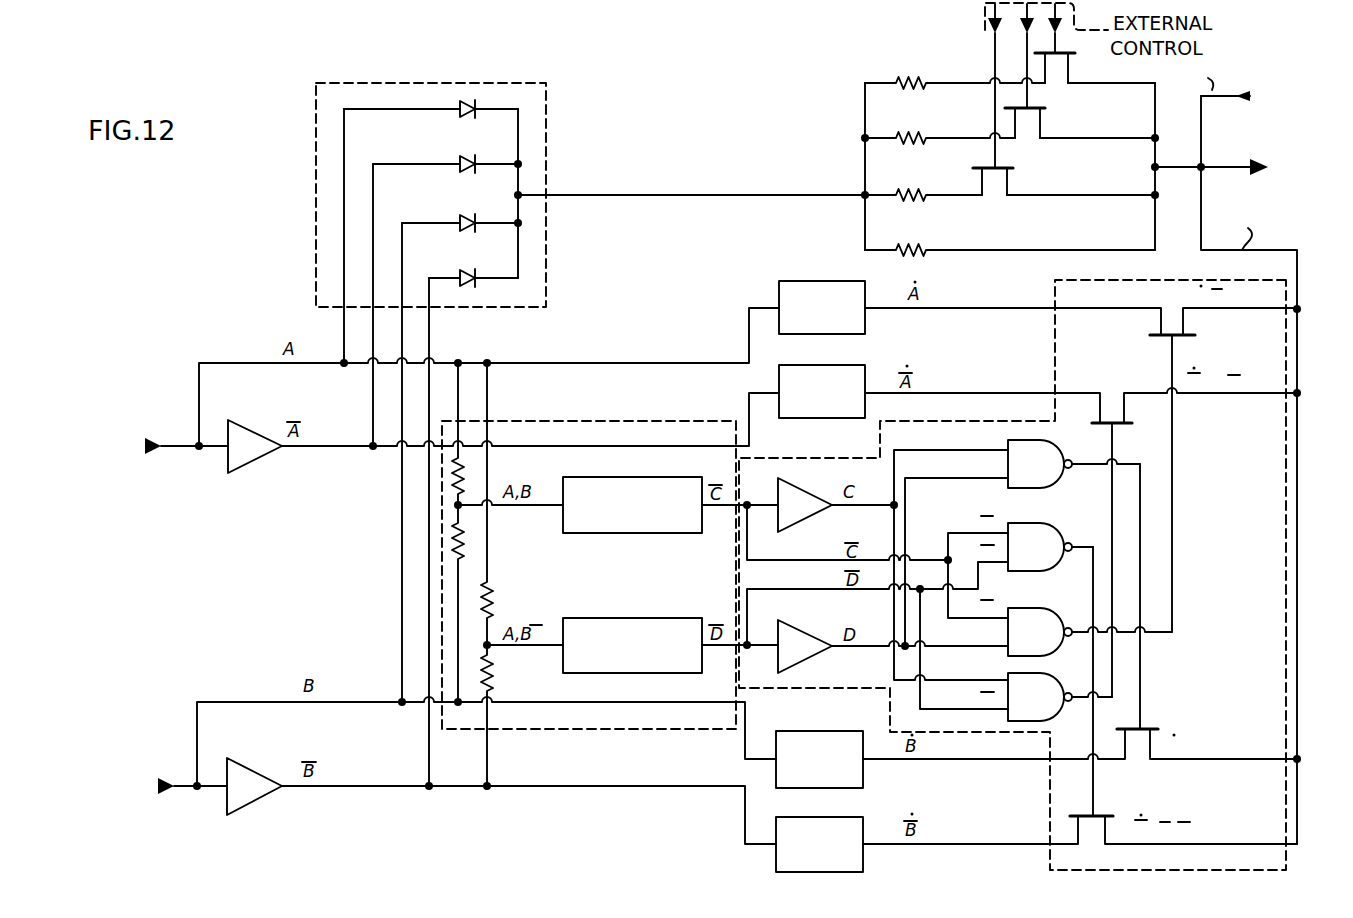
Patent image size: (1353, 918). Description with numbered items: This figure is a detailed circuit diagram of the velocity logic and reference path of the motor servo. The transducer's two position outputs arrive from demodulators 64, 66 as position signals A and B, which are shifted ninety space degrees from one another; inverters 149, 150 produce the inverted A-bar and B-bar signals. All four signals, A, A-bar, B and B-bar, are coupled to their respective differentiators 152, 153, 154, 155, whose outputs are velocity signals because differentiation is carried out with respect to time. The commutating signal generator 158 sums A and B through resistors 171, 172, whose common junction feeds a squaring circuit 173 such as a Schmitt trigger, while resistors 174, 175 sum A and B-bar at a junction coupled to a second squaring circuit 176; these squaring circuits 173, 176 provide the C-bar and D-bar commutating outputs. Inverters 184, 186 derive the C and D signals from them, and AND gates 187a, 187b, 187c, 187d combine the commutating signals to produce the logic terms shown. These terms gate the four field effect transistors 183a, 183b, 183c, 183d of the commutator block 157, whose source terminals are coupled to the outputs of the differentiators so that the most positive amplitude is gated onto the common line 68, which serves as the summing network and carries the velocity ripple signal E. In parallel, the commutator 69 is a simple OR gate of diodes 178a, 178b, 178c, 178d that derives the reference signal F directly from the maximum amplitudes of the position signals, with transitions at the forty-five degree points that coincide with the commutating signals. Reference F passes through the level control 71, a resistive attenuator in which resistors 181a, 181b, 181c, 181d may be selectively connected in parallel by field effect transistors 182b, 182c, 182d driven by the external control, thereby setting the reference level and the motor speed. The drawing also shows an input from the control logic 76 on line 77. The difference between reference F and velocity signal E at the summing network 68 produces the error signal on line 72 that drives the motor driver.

The commutator unit 69 is at (585, 417).
The diode 178a is at (466, 98).
The diode 178b is at (468, 156).
The diode 178c is at (468, 215).
The diode 178d is at (468, 270).
The level control unit 71 is at (981, 130).
The resistor 181a is at (912, 240).
The resistor 181b is at (903, 184).
The resistor 181c is at (944, 116).
The resistor 181d is at (938, 62).
The field effect transistor 182b is at (1000, 175).
The field effect transistor 182c is at (1030, 116).
The field effect transistor 182d is at (1056, 62).
The line 72 is at (1242, 155).
The summing network 68 is at (1208, 172).
The control line 77 is at (1238, 102).
The control logic 76 is at (1282, 116).
The demodulator 64 is at (172, 447).
The demodulator 66 is at (182, 787).
The inverter 149 is at (266, 430).
The inverter 150 is at (265, 770).
The differentiator 152 is at (782, 277).
The differentiator 153 is at (778, 378).
The differentiator 154 is at (826, 728).
The differentiator 155 is at (772, 854).
The commutator block 157 is at (1018, 571).
The commutating signal generator 158 is at (610, 559).
The resistor 171 is at (470, 477).
The resistor 172 is at (470, 545).
The squaring circuit 173 is at (650, 540).
The resistor 174 is at (494, 598).
The resistor 175 is at (494, 672).
The squaring circuit 176 is at (612, 622).
The inverter 184 is at (822, 477).
The inverter 186 is at (820, 628).
The AND gate 187a is at (1036, 447).
The AND gate 187b is at (1036, 530).
The AND gate 187c is at (1036, 615).
The AND gate 187d is at (1036, 680).
The field effect transistor 183a is at (1142, 324).
The field effect transistor 183b is at (1108, 408).
The field effect transistor 183c is at (1146, 712).
The field effect transistor 183d is at (1100, 806).